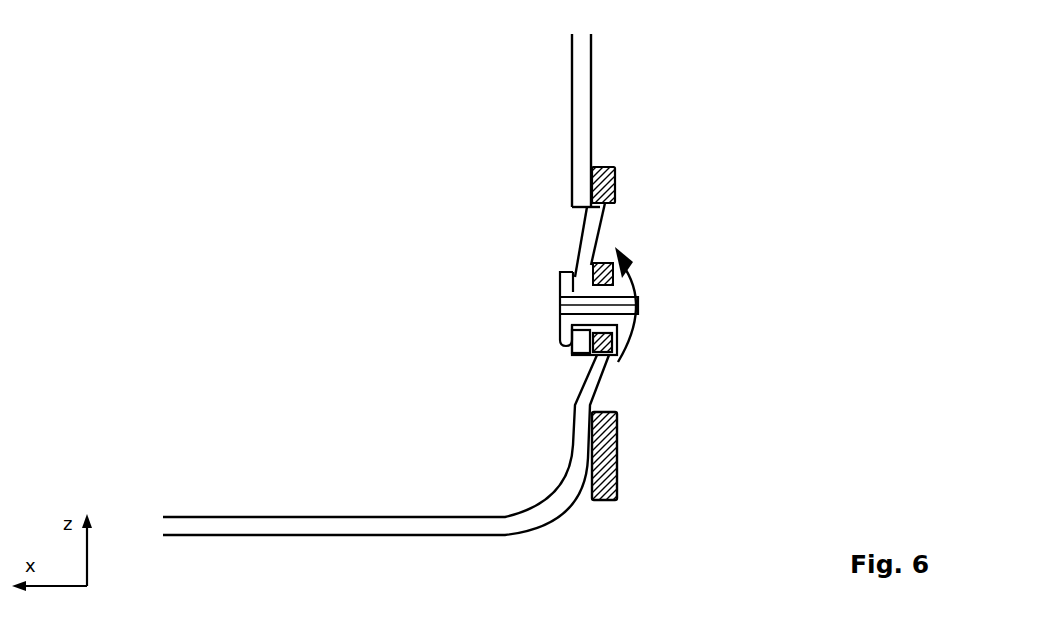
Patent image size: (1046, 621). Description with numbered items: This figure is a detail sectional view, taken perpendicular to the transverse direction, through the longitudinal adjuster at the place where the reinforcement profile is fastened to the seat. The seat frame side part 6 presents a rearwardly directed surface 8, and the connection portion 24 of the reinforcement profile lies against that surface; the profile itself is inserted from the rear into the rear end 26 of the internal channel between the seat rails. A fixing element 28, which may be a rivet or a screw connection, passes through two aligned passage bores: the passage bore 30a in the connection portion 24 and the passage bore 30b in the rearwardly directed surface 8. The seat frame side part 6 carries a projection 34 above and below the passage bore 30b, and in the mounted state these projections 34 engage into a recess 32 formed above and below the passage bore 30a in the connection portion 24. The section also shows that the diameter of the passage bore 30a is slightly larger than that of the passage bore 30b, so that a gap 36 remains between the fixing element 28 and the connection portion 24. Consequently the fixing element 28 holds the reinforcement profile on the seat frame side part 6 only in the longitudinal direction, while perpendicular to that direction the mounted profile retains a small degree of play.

The seat frame side part 6 is at (582, 88).
The rearwardly directed surface 8 is at (593, 138).
The connection portion 24 is at (603, 450).
The rear end 26 is at (800, 291).
The fixing element 28 is at (573, 310).
The passage bore 30a is at (607, 278).
The passage bore 30b is at (590, 284).
The recess 32 is at (612, 227).
The projection 34 is at (587, 222).
The gap 36 is at (613, 298).